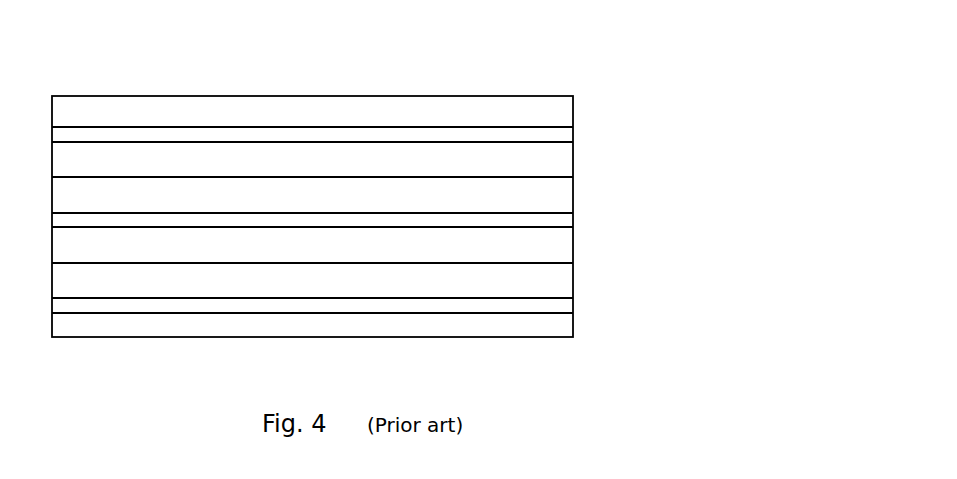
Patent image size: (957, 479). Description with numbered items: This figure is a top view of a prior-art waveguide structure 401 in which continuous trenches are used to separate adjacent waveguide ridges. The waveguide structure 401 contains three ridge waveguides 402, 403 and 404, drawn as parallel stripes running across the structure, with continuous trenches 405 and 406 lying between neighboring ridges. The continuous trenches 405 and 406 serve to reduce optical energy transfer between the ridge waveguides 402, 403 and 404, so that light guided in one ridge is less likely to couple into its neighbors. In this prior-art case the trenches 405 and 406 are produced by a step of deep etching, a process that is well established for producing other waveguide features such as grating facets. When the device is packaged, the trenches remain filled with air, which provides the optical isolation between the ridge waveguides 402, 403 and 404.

The waveguide structure 401 is at (527, 324).
The ridge waveguide 402 is at (567, 138).
The ridge waveguide 403 is at (567, 220).
The ridge waveguide 404 is at (567, 306).
The continuous trench 405 is at (165, 177).
The continuous trench 406 is at (245, 262).